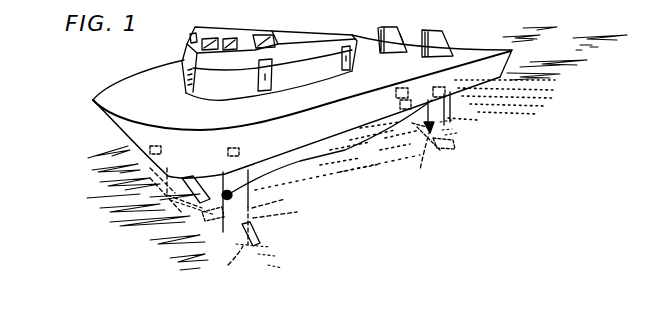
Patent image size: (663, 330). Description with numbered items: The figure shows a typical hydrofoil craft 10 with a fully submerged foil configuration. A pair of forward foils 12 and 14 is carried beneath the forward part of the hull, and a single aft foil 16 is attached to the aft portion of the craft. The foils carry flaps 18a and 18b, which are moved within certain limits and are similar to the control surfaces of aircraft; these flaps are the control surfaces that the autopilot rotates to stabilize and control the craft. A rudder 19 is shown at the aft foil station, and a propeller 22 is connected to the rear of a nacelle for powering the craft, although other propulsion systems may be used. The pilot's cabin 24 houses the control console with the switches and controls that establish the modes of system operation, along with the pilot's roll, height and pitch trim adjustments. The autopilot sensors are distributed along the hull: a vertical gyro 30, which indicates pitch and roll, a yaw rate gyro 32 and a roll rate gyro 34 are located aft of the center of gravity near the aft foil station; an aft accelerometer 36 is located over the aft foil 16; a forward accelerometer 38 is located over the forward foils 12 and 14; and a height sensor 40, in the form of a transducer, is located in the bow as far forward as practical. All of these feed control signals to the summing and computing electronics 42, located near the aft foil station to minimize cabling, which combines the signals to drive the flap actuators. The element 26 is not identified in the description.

The hydrofoil craft 10 is at (98, 111).
The forward foil 12 is at (232, 265).
The forward foil 14 is at (182, 182).
The aft foil 16 is at (419, 159).
The flap 18a is at (236, 180).
The flap 18b is at (453, 147).
The rudder 19 is at (443, 127).
The propeller 22 is at (200, 182).
The pilot's cabin 24 is at (186, 42).
The foil actuator 26 is at (285, 210).
The vertical gyro 30 is at (410, 50).
The yaw rate gyro 32 is at (407, 64).
The roll rate gyro 34 is at (402, 87).
The aft accelerometer 36 is at (440, 89).
The forward accelerometer 38 is at (240, 151).
The height sensor 40 is at (162, 149).
The summing and computing electronics 42 is at (400, 105).